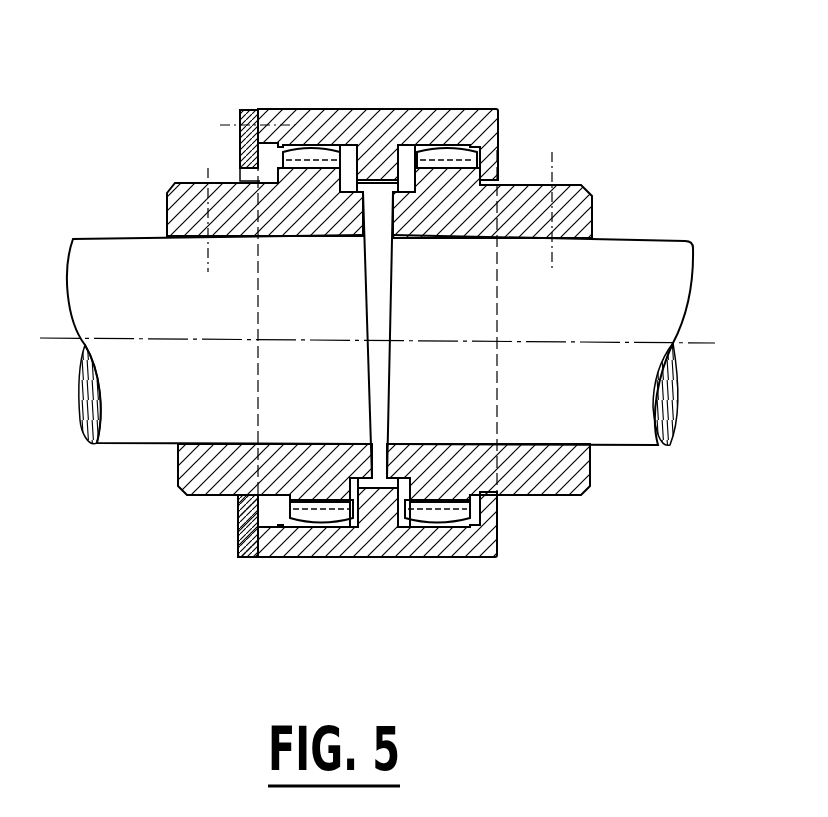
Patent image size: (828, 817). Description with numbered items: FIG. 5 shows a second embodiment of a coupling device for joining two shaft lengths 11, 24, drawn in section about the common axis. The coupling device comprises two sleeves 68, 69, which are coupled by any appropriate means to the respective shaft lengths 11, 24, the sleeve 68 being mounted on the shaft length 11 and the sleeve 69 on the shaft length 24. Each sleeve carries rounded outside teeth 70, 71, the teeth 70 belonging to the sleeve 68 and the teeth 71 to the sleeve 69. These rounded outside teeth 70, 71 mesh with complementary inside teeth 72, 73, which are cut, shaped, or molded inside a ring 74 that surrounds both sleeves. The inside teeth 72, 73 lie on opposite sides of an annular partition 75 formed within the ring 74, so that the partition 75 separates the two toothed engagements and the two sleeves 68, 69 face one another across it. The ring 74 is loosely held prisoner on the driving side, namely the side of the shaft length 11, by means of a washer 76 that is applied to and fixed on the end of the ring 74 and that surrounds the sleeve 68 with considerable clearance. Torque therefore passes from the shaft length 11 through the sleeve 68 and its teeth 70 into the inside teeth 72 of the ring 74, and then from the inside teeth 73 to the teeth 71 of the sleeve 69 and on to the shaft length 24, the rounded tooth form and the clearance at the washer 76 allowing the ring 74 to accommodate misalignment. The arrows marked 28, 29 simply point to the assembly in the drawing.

The shaft length 11 is at (128, 427).
The shaft length 24 is at (653, 257).
The bearing assembly 28 is at (357, 279).
The second bearing 29 is at (511, 107).
The sleeve 68 is at (205, 483).
The sleeve 69 is at (587, 485).
The rounded outside teeth 70 is at (327, 513).
The rounded outside teeth 71 is at (434, 515).
The inside teeth 72 is at (275, 513).
The inside teeth 73 is at (480, 518).
The ring 74 is at (361, 110).
The annular partition 75 is at (385, 168).
The washer 76 is at (240, 148).